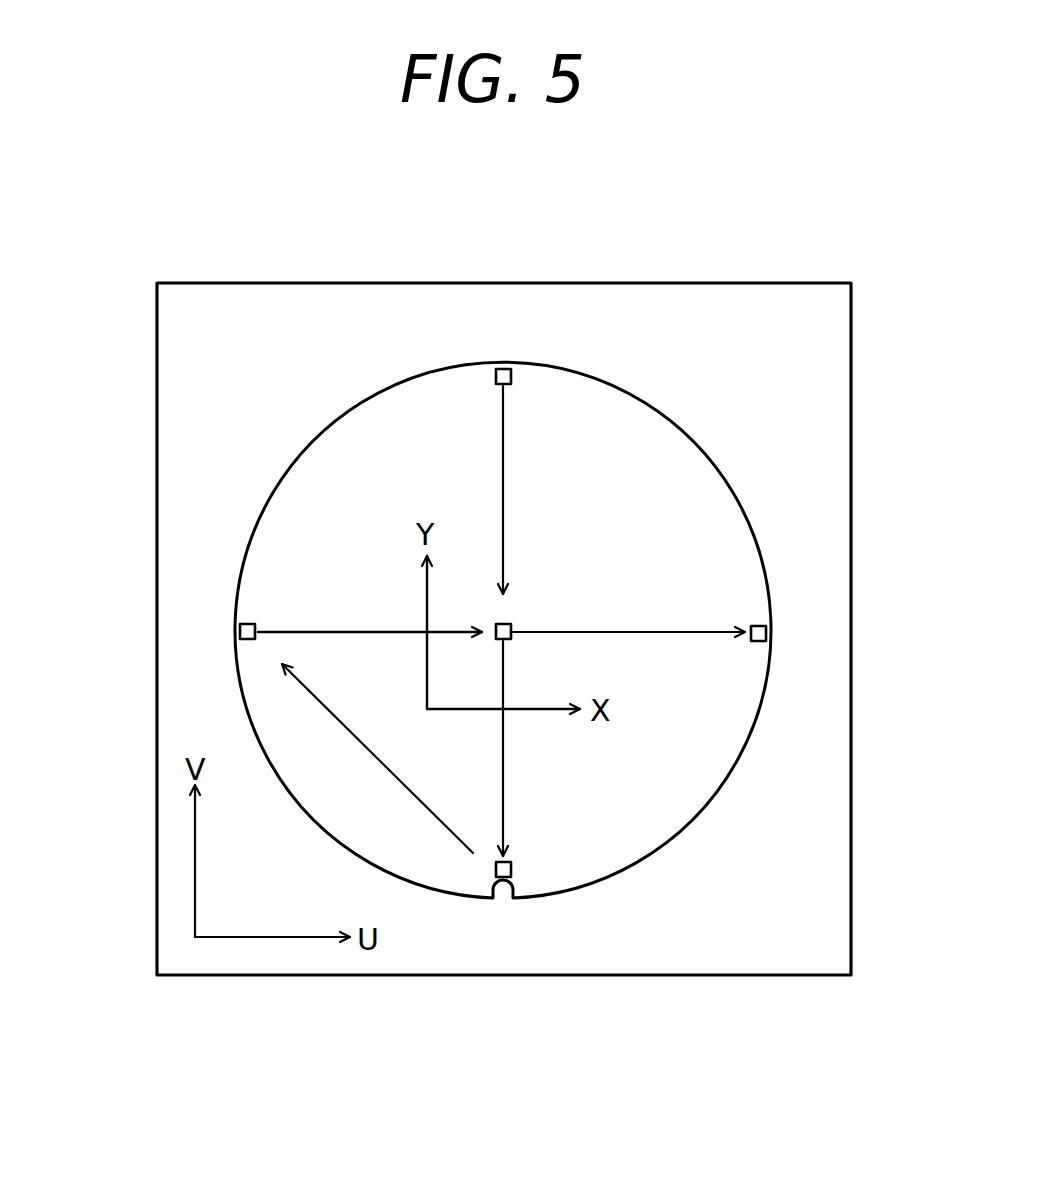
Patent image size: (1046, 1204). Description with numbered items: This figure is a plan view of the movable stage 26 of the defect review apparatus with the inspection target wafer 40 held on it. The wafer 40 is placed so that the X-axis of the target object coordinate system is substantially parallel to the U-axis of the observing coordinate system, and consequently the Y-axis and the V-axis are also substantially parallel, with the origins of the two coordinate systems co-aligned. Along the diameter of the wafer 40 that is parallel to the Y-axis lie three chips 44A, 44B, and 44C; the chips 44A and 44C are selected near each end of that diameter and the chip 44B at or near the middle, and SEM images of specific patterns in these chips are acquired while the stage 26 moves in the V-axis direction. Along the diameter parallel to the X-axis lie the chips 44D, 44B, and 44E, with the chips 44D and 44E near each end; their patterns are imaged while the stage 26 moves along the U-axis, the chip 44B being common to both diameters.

The movable stage 26 is at (852, 517).
The inspection target wafer 40 is at (707, 450).
The chip 44A is at (512, 372).
The chip 44B is at (512, 626).
The chip 44C is at (511, 872).
The chip 44D is at (240, 630).
The chip 44E is at (768, 630).